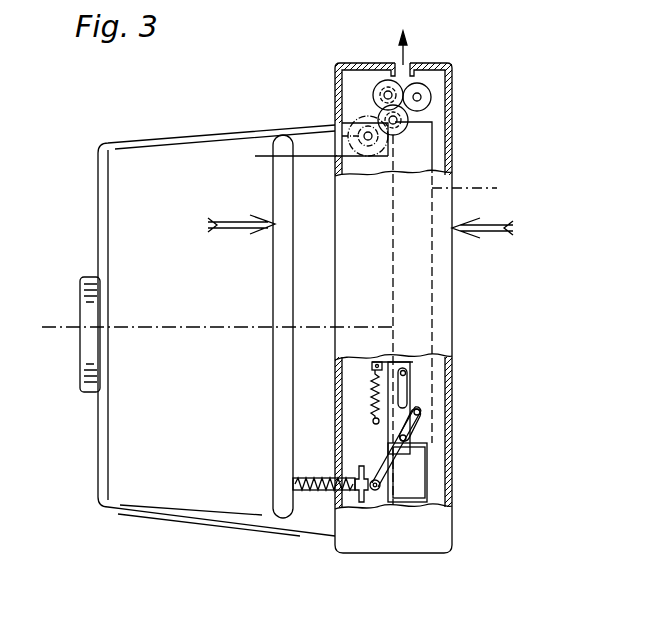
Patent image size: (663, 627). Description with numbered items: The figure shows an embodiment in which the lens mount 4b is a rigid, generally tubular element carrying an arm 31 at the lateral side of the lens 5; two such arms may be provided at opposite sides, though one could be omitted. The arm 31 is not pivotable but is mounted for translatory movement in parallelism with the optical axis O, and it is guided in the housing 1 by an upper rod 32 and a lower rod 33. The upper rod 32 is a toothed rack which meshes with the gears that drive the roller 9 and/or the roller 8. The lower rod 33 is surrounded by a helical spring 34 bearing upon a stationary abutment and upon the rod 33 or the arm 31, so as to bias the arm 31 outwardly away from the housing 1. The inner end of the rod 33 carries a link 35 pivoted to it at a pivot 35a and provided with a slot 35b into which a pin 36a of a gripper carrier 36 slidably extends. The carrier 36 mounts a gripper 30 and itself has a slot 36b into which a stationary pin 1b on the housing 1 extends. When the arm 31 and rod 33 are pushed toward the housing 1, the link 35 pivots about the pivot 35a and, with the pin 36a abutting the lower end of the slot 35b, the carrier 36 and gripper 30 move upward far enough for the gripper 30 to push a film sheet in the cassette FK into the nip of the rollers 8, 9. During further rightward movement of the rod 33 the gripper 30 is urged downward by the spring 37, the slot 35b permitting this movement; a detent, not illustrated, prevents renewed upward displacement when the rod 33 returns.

The housing 1 is at (452, 128).
The stationary pin 1b is at (415, 358).
The lens mount 4b is at (143, 495).
The lens 5 is at (82, 302).
The roller 8 is at (425, 86).
The roller 9 is at (388, 82).
The gripper 30 is at (395, 505).
The arm 31 is at (285, 342).
The upper rod 32 is at (317, 125).
The lower rod 33 is at (325, 491).
The helical spring 34 is at (305, 491).
The link 35 is at (378, 473).
The pivot 35a is at (372, 491).
The slot 35b is at (422, 417).
The gripper carrier 36 is at (410, 390).
The pin 36a is at (412, 440).
The slot 36b is at (403, 382).
The spring 37 is at (372, 385).
The cassette FK is at (480, 184).
The optical axis O is at (52, 314).